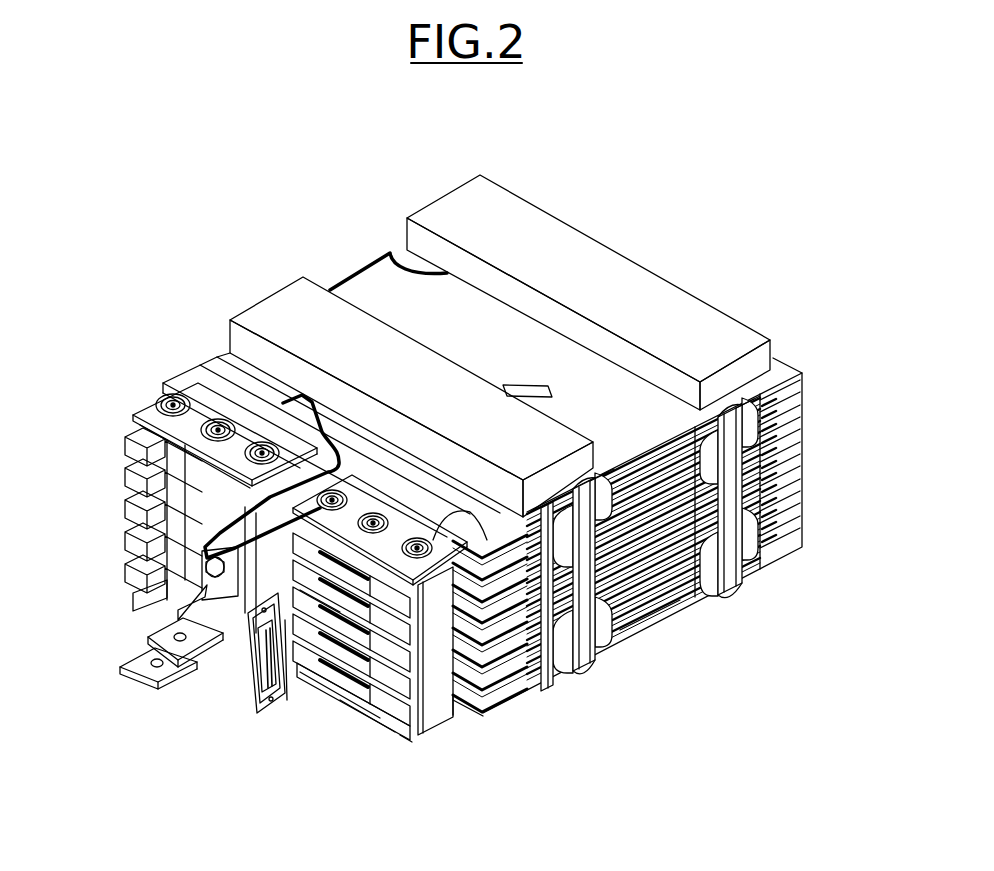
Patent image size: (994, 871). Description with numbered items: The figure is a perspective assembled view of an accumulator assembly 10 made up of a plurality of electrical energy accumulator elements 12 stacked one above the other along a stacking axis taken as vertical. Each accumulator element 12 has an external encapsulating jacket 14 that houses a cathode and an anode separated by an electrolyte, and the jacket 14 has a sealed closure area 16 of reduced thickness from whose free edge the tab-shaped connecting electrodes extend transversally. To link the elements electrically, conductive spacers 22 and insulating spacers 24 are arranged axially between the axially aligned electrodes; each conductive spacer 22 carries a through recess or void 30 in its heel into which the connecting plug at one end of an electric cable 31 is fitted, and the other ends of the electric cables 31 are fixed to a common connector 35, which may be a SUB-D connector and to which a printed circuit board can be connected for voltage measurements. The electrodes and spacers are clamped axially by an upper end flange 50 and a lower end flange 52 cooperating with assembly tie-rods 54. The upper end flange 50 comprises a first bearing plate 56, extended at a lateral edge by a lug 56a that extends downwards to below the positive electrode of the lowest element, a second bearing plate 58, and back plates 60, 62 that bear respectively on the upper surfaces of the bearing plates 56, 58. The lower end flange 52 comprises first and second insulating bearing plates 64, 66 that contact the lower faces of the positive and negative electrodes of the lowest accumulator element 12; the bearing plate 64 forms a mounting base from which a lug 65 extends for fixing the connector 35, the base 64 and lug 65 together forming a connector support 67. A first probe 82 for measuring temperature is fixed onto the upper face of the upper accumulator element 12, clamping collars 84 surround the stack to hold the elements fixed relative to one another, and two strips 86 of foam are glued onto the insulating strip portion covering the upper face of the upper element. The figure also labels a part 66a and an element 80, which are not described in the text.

The accumulator assembly 10 is at (693, 277).
The accumulator elements 12 is at (806, 458).
The external encapsulating jacket 14 is at (648, 607).
The sealed closure area 16 is at (477, 712).
The conductive spacers 22 is at (112, 509).
The insulating spacers 24 is at (322, 662).
The through recess or void 30 is at (432, 673).
The electric cable 31 is at (336, 688).
The common connector 35 is at (285, 700).
The upper end flange 50 is at (249, 424).
The lower end flange 52 is at (384, 738).
The assembly tie-rods 54 is at (155, 408).
The first bearing plate 56 is at (555, 672).
The lug 56a is at (460, 708).
The second bearing plate 58 is at (218, 408).
The back plate 60 is at (428, 678).
The back plate 62 is at (205, 445).
The first bearing plate 64 is at (408, 737).
The lug 65 is at (255, 706).
The second bearing plate 66 is at (133, 593).
The output bus bar 66a is at (233, 625).
The connector support 67 is at (371, 730).
The wire harness 80 is at (181, 398).
The first probe 82 is at (547, 390).
The clamping collars 84 is at (733, 572).
The strips of foam 86 is at (617, 294).